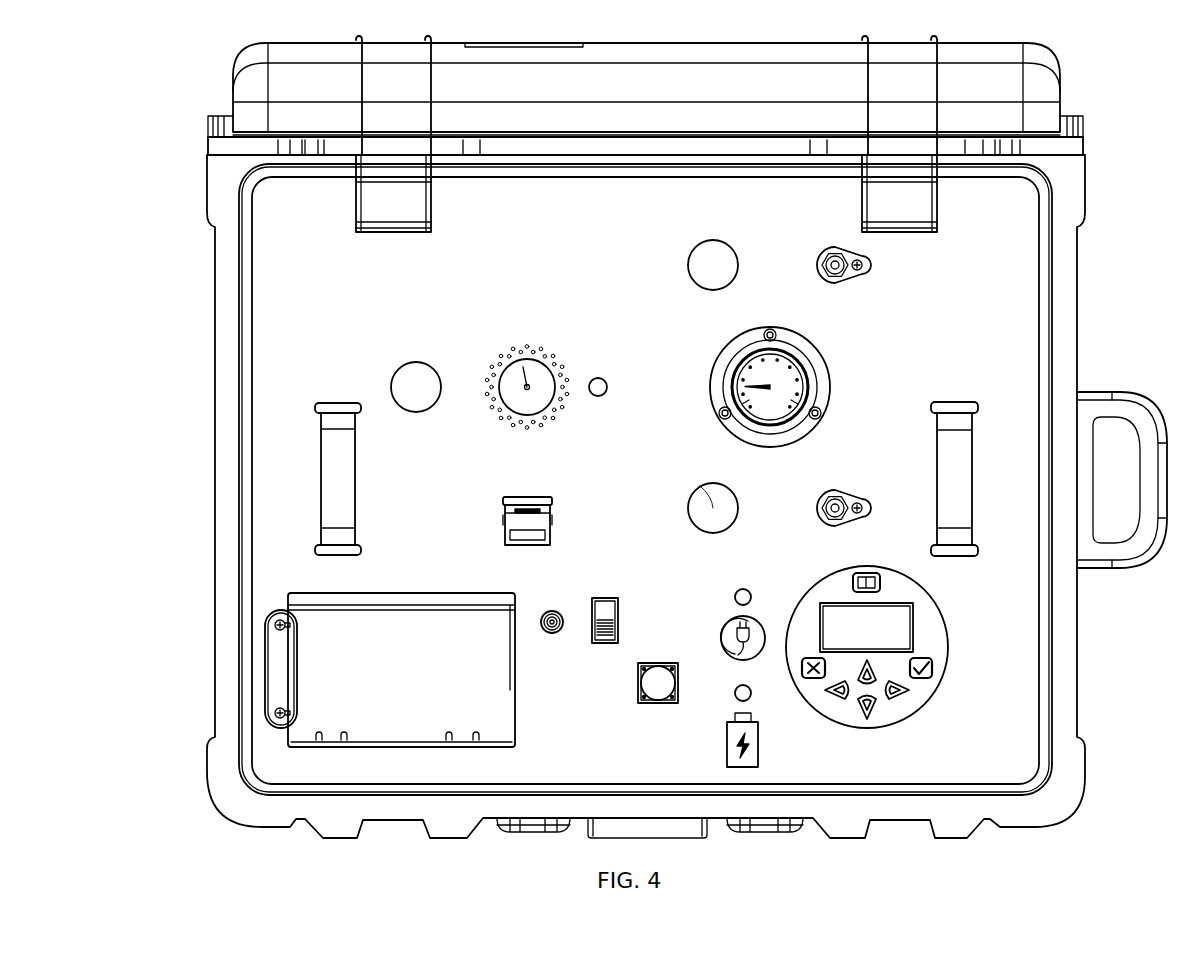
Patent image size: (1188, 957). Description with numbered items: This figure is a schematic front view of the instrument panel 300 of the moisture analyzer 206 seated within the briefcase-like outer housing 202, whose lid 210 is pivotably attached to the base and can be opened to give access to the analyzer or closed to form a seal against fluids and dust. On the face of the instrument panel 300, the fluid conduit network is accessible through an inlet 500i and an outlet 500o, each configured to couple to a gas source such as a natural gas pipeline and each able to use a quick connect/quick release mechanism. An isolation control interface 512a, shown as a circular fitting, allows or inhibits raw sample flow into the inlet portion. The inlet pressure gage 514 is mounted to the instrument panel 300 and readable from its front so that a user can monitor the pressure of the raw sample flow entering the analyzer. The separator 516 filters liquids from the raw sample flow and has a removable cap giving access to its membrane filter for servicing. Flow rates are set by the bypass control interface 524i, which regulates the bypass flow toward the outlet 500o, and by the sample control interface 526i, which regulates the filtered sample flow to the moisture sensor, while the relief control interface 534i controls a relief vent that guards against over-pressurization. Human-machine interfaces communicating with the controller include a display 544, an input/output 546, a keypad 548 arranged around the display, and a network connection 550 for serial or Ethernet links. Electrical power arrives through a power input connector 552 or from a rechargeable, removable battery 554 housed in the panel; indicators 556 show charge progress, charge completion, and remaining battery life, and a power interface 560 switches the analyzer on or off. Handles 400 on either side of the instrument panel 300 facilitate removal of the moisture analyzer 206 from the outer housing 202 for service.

The outer housing 202 is at (243, 806).
The moisture analyzer 206 is at (1003, 265).
The lid 210 is at (233, 62).
The instrument panel 300 is at (326, 241).
The handles 400 is at (340, 462).
The outlet 500o is at (822, 252).
The inlet 500i is at (845, 492).
The port 512a is at (700, 486).
The inlet pressure gage 514 is at (830, 380).
The separator 516 is at (527, 362).
The bypass control interface 524i is at (706, 265).
The sample control interface 526i is at (391, 383).
The relief control interface 534i is at (610, 385).
The display 544 is at (897, 630).
The input/output 546 is at (658, 683).
The keypad 548 is at (913, 693).
The network connection 550 is at (540, 520).
The power input connector 552 is at (552, 634).
The battery 554 is at (419, 688).
The indicators 556 is at (772, 574).
The power interface 560 is at (620, 616).